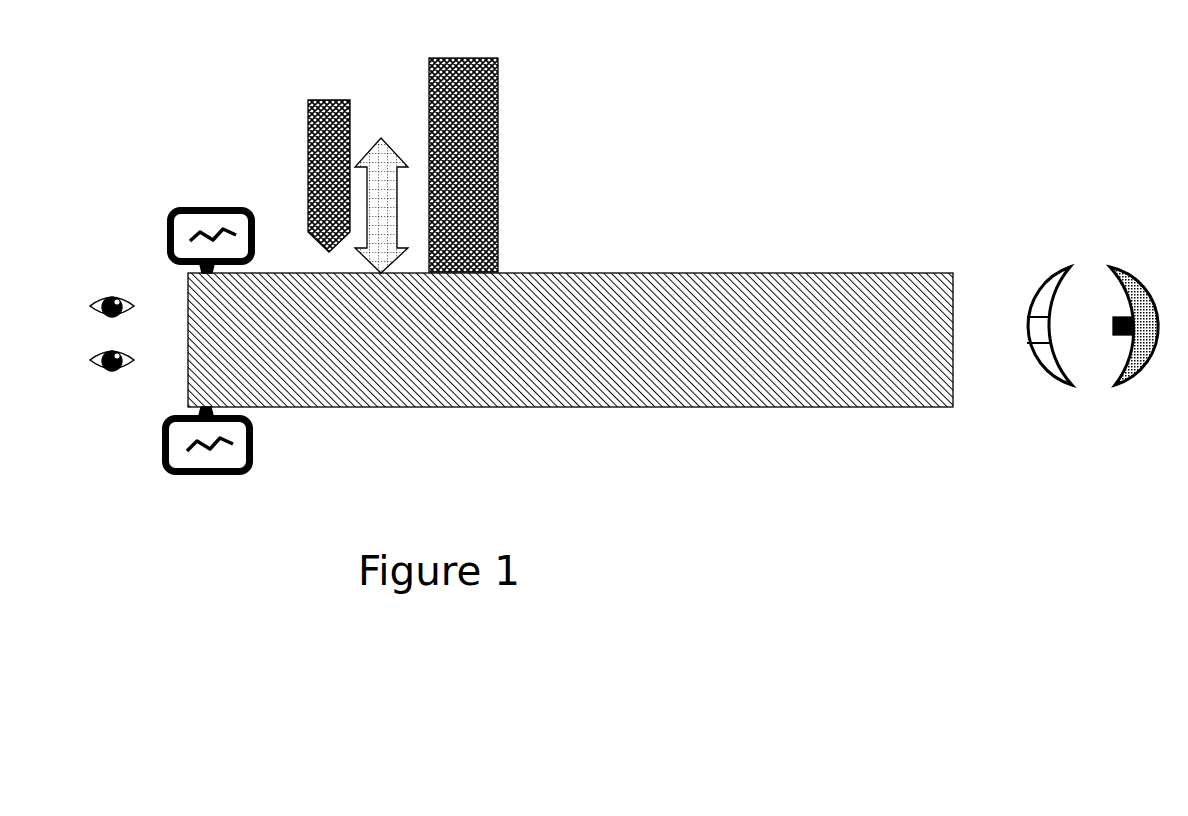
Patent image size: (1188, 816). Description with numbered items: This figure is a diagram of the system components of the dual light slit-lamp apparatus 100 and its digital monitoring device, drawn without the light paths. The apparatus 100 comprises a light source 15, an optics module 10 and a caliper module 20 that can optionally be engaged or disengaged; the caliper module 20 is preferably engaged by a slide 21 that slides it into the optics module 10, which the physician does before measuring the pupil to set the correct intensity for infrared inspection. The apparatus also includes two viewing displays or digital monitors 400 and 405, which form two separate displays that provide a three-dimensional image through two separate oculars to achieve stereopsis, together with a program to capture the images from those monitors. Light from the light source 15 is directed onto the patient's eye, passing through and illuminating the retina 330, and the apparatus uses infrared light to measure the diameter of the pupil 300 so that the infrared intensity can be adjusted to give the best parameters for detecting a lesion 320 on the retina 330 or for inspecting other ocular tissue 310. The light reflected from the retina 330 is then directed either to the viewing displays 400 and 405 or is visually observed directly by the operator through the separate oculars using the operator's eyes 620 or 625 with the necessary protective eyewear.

The optics module 10 is at (375, 420).
The light source 15 is at (513, 138).
The caliper module 20 is at (307, 133).
The slide 21 is at (377, 125).
The slit-lamp apparatus 100 is at (660, 289).
The pupil 300 is at (1015, 315).
The ocular tissue 310 is at (1050, 402).
The lesion 320 is at (1110, 313).
The retina 330 is at (1117, 393).
The viewing display/digital monitor 400 is at (235, 195).
The viewing display/digital monitor 405 is at (207, 488).
The eye of operator 620 is at (98, 277).
The eye of operator 625 is at (115, 373).